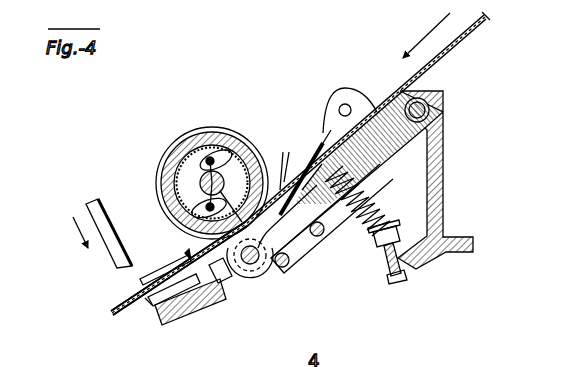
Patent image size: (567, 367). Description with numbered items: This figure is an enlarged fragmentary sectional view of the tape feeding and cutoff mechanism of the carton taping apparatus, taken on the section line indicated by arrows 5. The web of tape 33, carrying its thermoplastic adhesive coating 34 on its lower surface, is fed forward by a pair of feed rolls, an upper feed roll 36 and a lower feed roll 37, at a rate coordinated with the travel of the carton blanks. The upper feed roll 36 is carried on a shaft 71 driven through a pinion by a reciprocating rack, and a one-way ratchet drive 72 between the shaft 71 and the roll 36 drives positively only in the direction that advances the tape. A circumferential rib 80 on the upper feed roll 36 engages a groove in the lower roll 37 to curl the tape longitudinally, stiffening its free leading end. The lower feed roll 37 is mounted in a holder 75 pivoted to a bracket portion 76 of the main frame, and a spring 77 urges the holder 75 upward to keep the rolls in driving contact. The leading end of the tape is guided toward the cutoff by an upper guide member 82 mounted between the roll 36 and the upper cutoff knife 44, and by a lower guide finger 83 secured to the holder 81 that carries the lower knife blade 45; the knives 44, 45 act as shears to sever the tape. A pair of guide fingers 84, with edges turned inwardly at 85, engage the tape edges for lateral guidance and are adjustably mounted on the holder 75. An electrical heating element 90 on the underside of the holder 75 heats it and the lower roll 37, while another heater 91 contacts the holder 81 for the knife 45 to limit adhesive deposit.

The section line 5- 5 is at (193, 82).
The web of tape 33 is at (116, 309).
The adhesive coating 34 is at (460, 40).
The upper feed roll 36 is at (172, 150).
The lower feed roll 37 is at (253, 278).
The upper cutoff knife 44 is at (92, 205).
The lower knife blade 45 is at (147, 302).
The shaft 71 is at (200, 180).
The one-way ratchet drive 72 is at (232, 152).
The holder 75 is at (382, 158).
The bracket portion 76 is at (445, 135).
The spring 77 is at (375, 207).
The circumferential rib 80 is at (213, 127).
The holder 81 is at (150, 312).
The upper guide member 82 is at (154, 277).
The lower guide finger 83 is at (258, 262).
The guide fingers 84 is at (322, 135).
The inwardly turned edges 85 is at (296, 180).
The electrical heating element 90 is at (305, 247).
The heater 91 is at (185, 313).